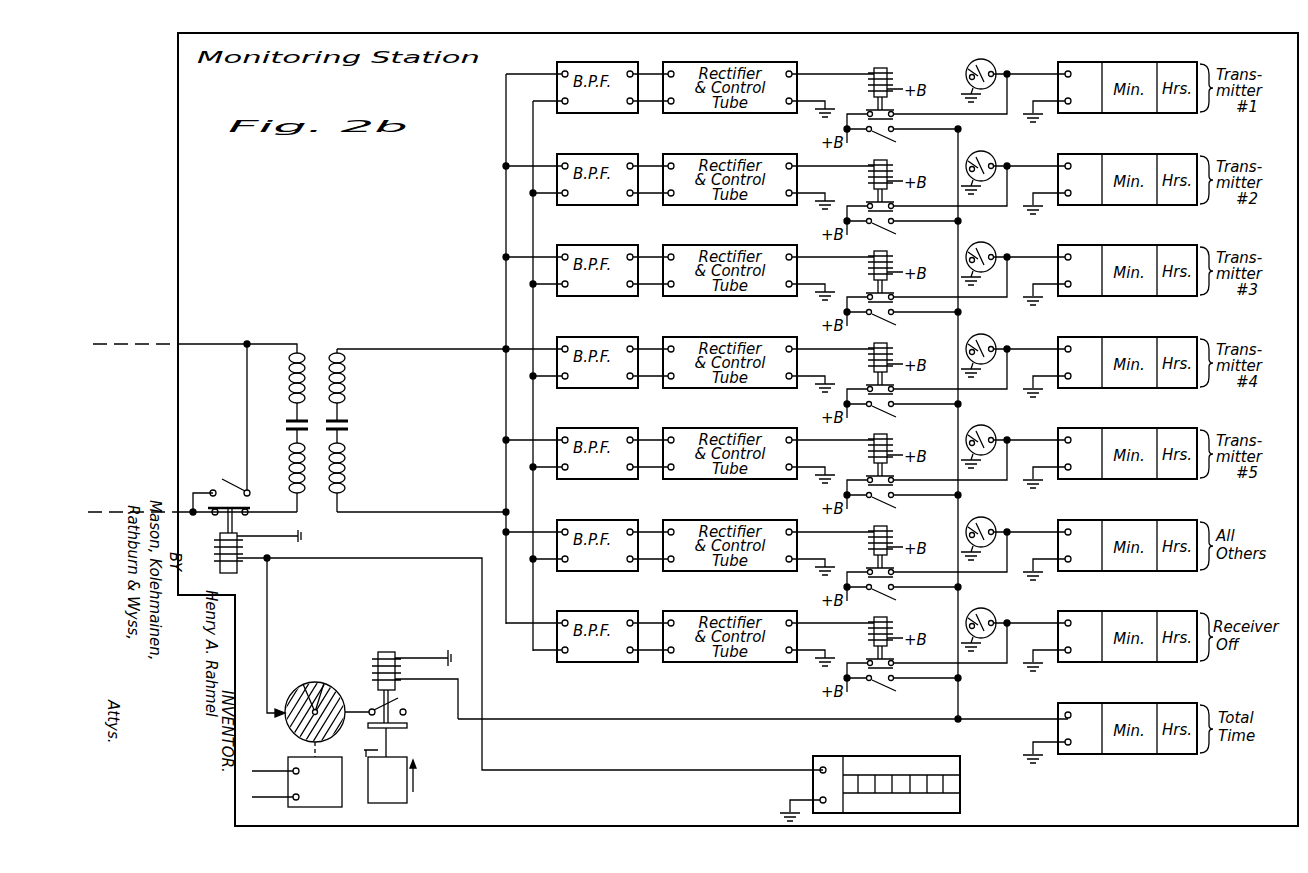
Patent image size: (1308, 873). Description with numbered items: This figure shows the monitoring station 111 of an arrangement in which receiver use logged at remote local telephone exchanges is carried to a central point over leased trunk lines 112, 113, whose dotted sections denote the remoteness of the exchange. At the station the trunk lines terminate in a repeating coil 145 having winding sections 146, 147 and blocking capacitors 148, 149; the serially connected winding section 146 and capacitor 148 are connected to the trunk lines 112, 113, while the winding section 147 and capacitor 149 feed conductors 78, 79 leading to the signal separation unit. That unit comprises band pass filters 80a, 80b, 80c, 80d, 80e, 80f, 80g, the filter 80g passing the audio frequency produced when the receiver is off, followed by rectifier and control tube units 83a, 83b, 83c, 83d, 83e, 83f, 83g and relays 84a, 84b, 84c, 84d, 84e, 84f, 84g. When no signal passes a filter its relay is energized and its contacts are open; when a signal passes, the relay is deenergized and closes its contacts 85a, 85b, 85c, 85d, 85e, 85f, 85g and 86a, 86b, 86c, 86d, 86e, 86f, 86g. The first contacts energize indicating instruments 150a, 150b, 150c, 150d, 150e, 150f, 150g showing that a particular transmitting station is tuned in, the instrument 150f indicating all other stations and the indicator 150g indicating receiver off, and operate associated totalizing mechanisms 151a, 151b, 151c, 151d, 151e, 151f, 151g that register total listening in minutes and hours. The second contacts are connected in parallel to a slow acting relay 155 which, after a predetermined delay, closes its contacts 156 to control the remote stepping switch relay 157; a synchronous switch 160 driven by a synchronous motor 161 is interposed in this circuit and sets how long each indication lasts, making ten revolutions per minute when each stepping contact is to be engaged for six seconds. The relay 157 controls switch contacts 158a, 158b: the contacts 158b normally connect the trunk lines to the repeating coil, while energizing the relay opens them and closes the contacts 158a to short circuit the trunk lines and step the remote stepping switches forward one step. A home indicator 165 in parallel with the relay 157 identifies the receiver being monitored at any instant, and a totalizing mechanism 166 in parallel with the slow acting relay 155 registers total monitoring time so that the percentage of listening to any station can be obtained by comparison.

The monitoring station 111 is at (178, 79).
The leased trunk line 112 is at (97, 353).
The leased trunk line 113 is at (103, 514).
The repeating coil 145 is at (317, 414).
The winding section 146 is at (289, 382).
The winding section 147 is at (346, 382).
The blocking capacitor 148 is at (284, 424).
The blocking capacitor 149 is at (348, 426).
The conductor 78 is at (423, 349).
The conductor 79 is at (425, 512).
The band pass filter 80a is at (612, 58).
The band pass filter 80b is at (612, 150).
The band pass filter 80c is at (612, 241).
The band pass filter 80d is at (612, 333).
The band pass filter 80e is at (612, 424).
The band pass filter 80f is at (612, 516).
The band pass filter 80g is at (612, 607).
The rectifier and control tube unit 83a is at (758, 58).
The rectifier and control tube unit 83b is at (758, 150).
The rectifier and control tube unit 83c is at (758, 241).
The rectifier and control tube unit 83d is at (758, 333).
The rectifier and control tube unit 83e is at (758, 424).
The rectifier and control tube unit 83f is at (758, 516).
The rectifier and control tube unit 83g is at (758, 607).
The relay 84a is at (882, 68).
The relay 84b is at (888, 161).
The relay 84c is at (888, 252).
The relay 84d is at (888, 344).
The relay 84e is at (888, 435).
The relay 84f is at (888, 527).
The relay 84g is at (888, 618).
The relay contacts 85a is at (866, 109).
The relay contacts 85b is at (866, 201).
The relay contacts 85c is at (866, 292).
The relay contacts 85d is at (866, 384).
The relay contacts 85e is at (866, 475).
The relay contacts 85f is at (866, 567).
The relay contacts 85g is at (866, 658).
The relay contacts 86a is at (896, 142).
The relay contacts 86b is at (896, 234).
The relay contacts 86c is at (896, 325).
The relay contacts 86d is at (896, 417).
The relay contacts 86e is at (896, 508).
The relay contacts 86f is at (896, 600).
The relay contacts 86g is at (896, 691).
The indicating instrument 150a is at (992, 64).
The indicating instrument 150b is at (992, 156).
The indicating instrument 150c is at (992, 247).
The indicating instrument 150d is at (992, 339).
The indicating instrument 150e is at (992, 430).
The indicating instrument 150f is at (992, 522).
The indicating instrument 150g is at (992, 613).
The totalizing mechanism 151a is at (1110, 63).
The totalizing mechanism 151b is at (1110, 155).
The totalizing mechanism 151c is at (1110, 246).
The totalizing mechanism 151d is at (1110, 338).
The totalizing mechanism 151e is at (1110, 429).
The totalizing mechanism 151f is at (1110, 521).
The totalizing mechanism 151g is at (1110, 612).
The slow acting relay 155 is at (382, 651).
The relay contacts 156 is at (380, 705).
The remote stepping switch relay 157 is at (220, 566).
The switch contacts 158a is at (212, 490).
The switch contacts 158b is at (240, 515).
The synchronous switch 160 is at (325, 704).
The synchronous motor 161 is at (288, 760).
The home indicator 165 is at (912, 752).
The totalizing mechanism 166 is at (1120, 700).